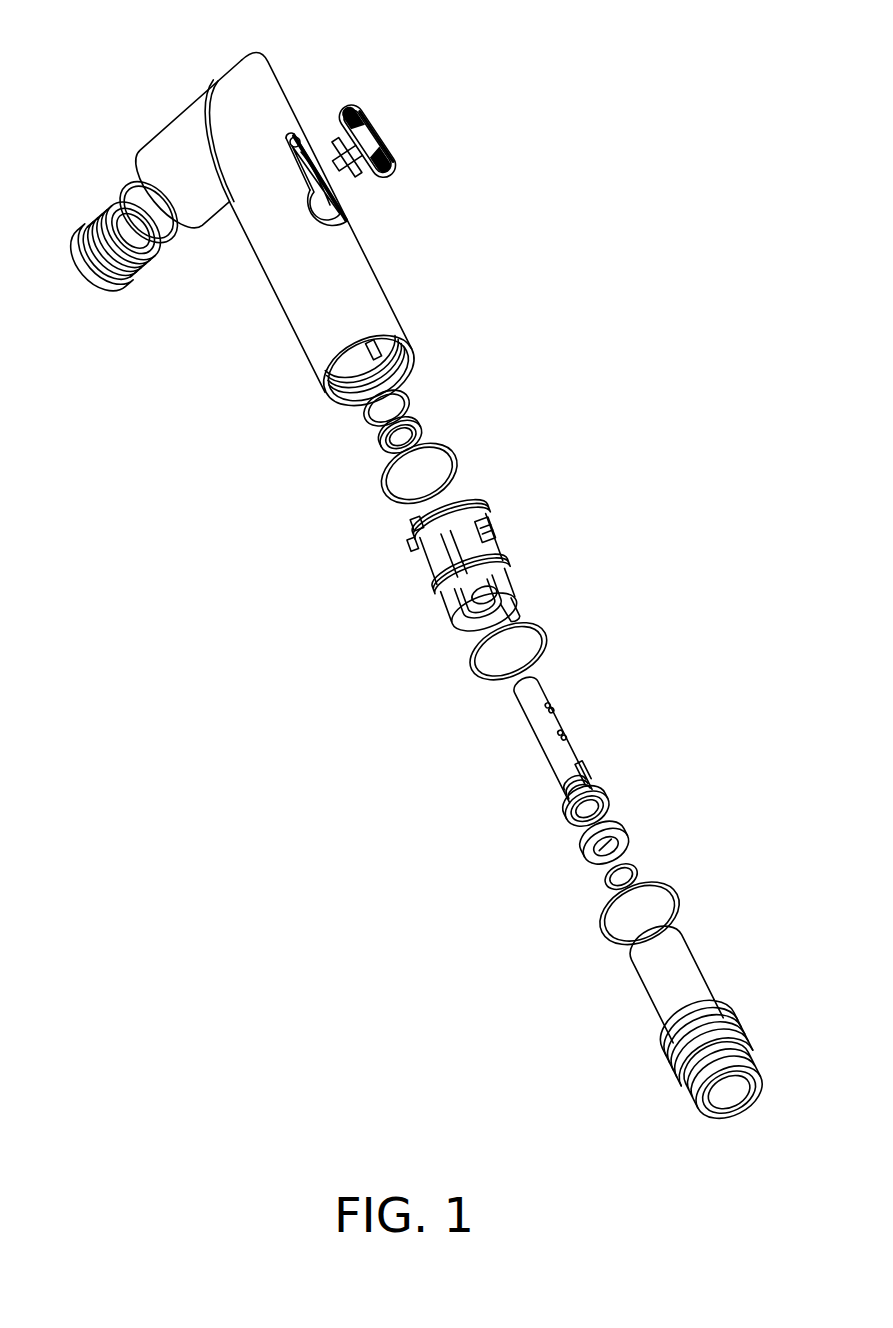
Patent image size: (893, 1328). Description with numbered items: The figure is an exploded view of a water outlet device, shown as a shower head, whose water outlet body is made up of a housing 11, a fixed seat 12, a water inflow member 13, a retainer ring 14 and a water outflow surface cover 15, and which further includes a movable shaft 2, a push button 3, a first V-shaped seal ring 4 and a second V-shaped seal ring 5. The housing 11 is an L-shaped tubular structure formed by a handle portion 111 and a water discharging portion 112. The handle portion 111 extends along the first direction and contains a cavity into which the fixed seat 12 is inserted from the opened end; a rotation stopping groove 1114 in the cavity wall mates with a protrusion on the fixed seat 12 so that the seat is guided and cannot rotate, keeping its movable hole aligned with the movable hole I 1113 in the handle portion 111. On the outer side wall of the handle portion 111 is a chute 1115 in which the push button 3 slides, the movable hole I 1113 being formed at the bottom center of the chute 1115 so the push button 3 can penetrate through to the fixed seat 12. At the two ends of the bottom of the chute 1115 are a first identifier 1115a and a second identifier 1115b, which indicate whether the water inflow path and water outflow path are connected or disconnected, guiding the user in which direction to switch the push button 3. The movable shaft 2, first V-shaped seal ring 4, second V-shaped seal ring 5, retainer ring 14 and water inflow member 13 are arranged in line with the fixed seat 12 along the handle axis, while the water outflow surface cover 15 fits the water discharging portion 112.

The housing 11 is at (153, 356).
The handle portion 111 is at (317, 331).
The water discharging portion 112 is at (197, 203).
The movable hole I 1113 is at (332, 190).
The rotation stopping groove 1114 is at (393, 343).
The chute 1115 is at (288, 145).
The first identifier 1115a is at (303, 136).
The second identifier 1115b is at (347, 217).
The push button 3 is at (381, 135).
The first V-shaped seal ring 4 is at (421, 423).
The fixed seat 12 is at (437, 565).
The movable shaft 2 is at (557, 754).
The second V-shaped seal ring 5 is at (600, 792).
The retainer ring 14 is at (587, 857).
The water inflow member 13 is at (682, 1000).
The water outflow surface cover 15 is at (92, 266).